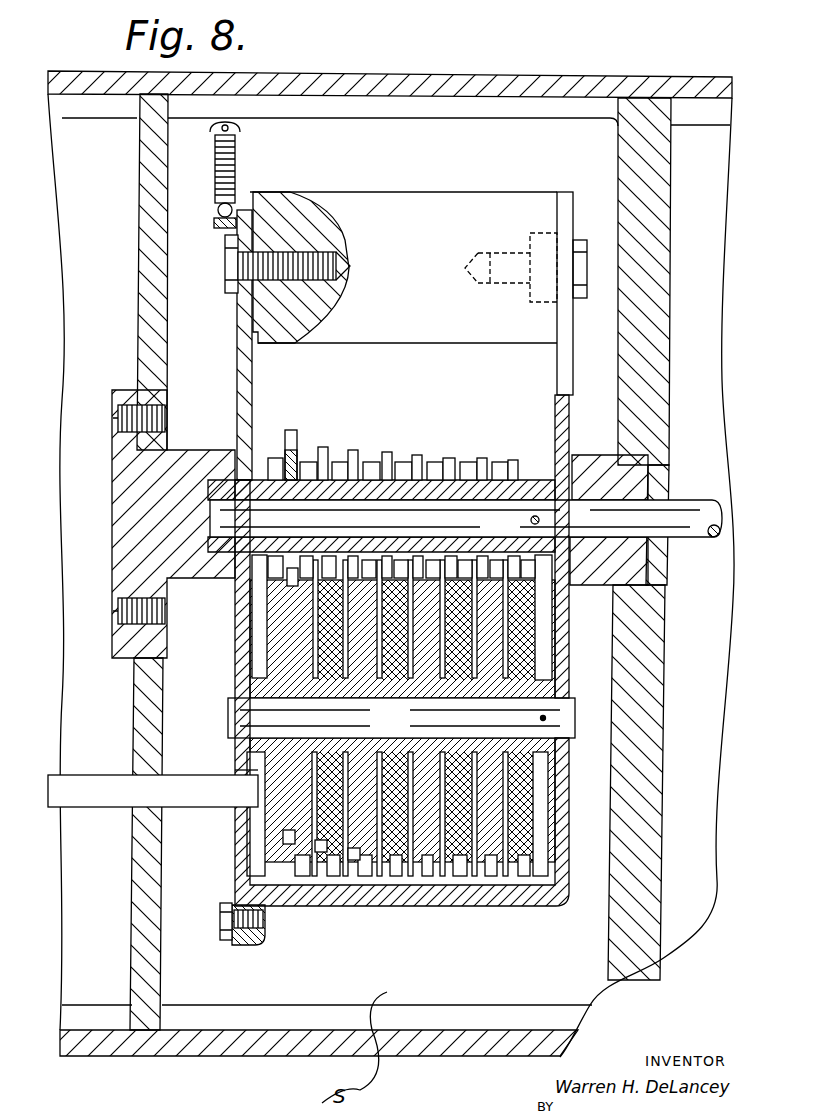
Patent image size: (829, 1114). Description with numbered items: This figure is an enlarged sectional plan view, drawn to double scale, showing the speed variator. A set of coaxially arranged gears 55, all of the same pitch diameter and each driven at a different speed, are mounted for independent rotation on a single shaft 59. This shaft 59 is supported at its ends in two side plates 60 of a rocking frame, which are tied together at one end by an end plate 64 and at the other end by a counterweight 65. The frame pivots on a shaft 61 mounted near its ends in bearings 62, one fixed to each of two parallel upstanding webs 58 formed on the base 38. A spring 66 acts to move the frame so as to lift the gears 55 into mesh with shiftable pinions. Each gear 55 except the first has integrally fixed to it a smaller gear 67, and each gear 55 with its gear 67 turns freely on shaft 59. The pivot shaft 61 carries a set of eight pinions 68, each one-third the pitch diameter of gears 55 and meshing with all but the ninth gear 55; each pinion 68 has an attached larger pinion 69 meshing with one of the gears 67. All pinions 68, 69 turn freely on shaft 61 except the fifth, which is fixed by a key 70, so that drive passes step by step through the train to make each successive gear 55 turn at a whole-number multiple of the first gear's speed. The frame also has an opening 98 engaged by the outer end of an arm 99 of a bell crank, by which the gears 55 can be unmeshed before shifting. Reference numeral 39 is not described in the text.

The base 38 is at (83, 320).
The housing wall 39 is at (622, 92).
The upstanding webs 58 is at (133, 893).
The shaft 59 is at (401, 718).
The side plates 60 is at (235, 865).
The shaft 61 is at (697, 508).
The bearings 62 is at (218, 580).
The end plate 64 is at (510, 906).
The counterweight 65 is at (445, 200).
The spring 66 is at (237, 170).
The gear 67 is at (352, 850).
The pinions 68 is at (275, 458).
The pinion 69 is at (323, 447).
The key 70 is at (408, 537).
The gears 55 is at (300, 876).
The opening 98 is at (240, 770).
The arm 99 is at (237, 776).